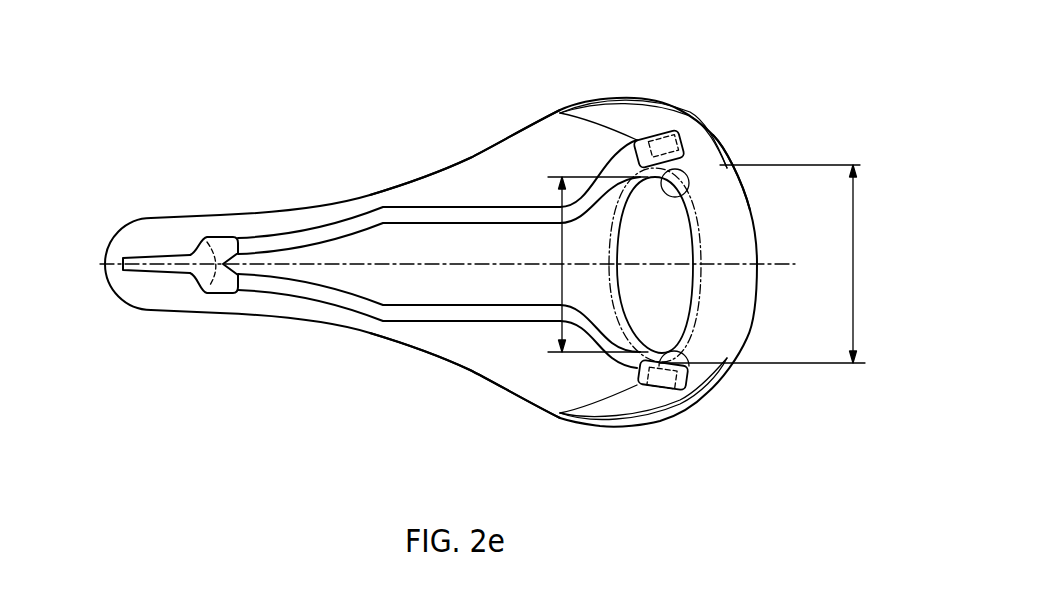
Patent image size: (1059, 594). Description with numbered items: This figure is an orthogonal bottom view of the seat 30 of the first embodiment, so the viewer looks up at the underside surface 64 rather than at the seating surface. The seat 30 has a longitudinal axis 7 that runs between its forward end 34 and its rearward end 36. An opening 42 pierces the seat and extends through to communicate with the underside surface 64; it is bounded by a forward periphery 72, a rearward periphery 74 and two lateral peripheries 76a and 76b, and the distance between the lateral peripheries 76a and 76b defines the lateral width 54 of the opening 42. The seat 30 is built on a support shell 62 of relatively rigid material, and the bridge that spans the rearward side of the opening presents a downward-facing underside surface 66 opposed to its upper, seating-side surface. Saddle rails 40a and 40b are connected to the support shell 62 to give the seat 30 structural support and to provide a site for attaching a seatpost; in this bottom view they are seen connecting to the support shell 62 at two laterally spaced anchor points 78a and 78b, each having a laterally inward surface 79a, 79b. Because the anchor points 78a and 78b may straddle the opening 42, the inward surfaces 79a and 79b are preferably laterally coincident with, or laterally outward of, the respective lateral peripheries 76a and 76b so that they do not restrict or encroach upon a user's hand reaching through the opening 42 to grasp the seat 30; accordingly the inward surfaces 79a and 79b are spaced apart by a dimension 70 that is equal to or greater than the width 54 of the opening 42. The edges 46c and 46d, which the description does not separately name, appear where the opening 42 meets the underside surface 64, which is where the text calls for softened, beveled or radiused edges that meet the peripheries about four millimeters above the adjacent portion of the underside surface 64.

The longitudinal axis 7 is at (183, 255).
The seat 30 is at (180, 458).
The forward end 34 is at (106, 266).
The rearward end 36 is at (752, 254).
The saddle rail 40a is at (326, 297).
The saddle rail 40b is at (337, 231).
The opening 42 is at (666, 233).
The rail rear portion 46c is at (690, 301).
The rail rear portion 46d is at (625, 226).
The lateral width 54 is at (553, 287).
The support shell 62 is at (513, 182).
The underside surface 64 is at (497, 284).
The bridge underside surface 66 is at (725, 240).
The dimension 70 is at (855, 340).
The forward periphery 72 is at (692, 282).
The rearward periphery 74 is at (712, 264).
The lateral periphery 76a is at (692, 358).
The lateral periphery 76b is at (686, 188).
The anchor point 78a is at (673, 392).
The anchor point 78b is at (672, 130).
The laterally inward surface 79a is at (677, 388).
The laterally inward surface 79b is at (680, 140).